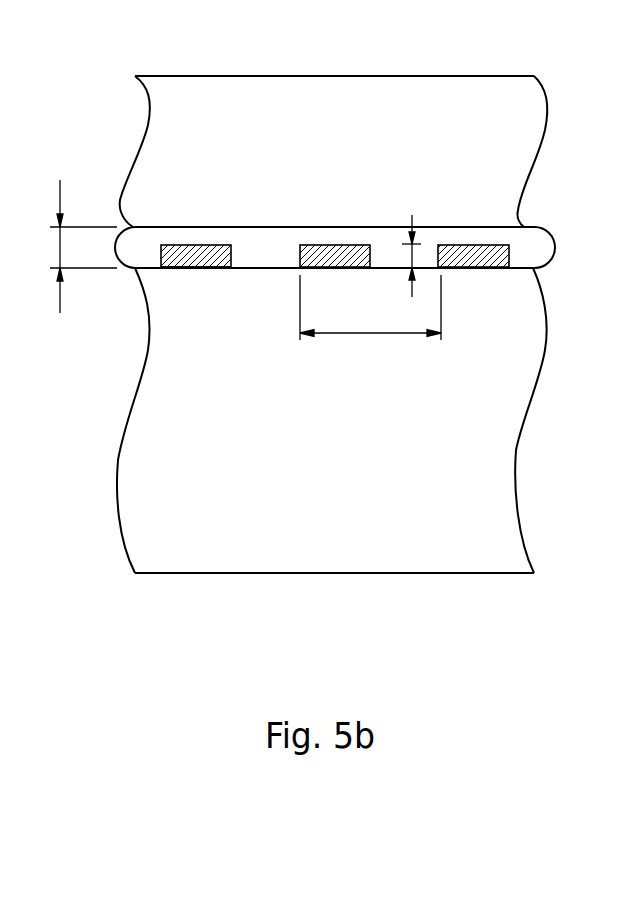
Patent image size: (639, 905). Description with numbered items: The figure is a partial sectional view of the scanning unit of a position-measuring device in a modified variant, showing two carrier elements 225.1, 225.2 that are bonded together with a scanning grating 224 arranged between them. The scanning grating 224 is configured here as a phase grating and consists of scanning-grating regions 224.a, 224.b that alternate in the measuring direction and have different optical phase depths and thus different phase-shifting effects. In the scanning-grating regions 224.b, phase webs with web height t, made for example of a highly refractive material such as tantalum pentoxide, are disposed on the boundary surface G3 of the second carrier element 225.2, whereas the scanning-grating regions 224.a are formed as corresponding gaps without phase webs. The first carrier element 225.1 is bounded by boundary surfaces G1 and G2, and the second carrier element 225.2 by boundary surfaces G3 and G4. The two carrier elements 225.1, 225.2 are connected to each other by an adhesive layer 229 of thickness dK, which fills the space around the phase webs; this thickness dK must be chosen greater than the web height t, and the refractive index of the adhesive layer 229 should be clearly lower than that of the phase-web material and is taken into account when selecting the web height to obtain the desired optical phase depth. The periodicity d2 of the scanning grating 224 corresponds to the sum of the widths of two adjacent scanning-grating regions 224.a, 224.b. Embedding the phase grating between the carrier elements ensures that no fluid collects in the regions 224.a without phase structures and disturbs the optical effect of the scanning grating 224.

The first carrier element 225.1 is at (152, 110).
The second carrier element 225.2 is at (128, 510).
The adhesive layer 229 is at (548, 246).
The scanning grating 224 is at (322, 245).
The scanning-grating regions 224.a is at (250, 268).
The scanning-grating regions 224.b is at (192, 266).
The boundary surface G1 is at (392, 76).
The boundary surface G2 is at (467, 227).
The boundary surface G3 is at (275, 268).
The boundary surface G4 is at (424, 573).
The web height t is at (408, 258).
The thickness dK is at (72, 246).
The periodicity d2 is at (370, 307).